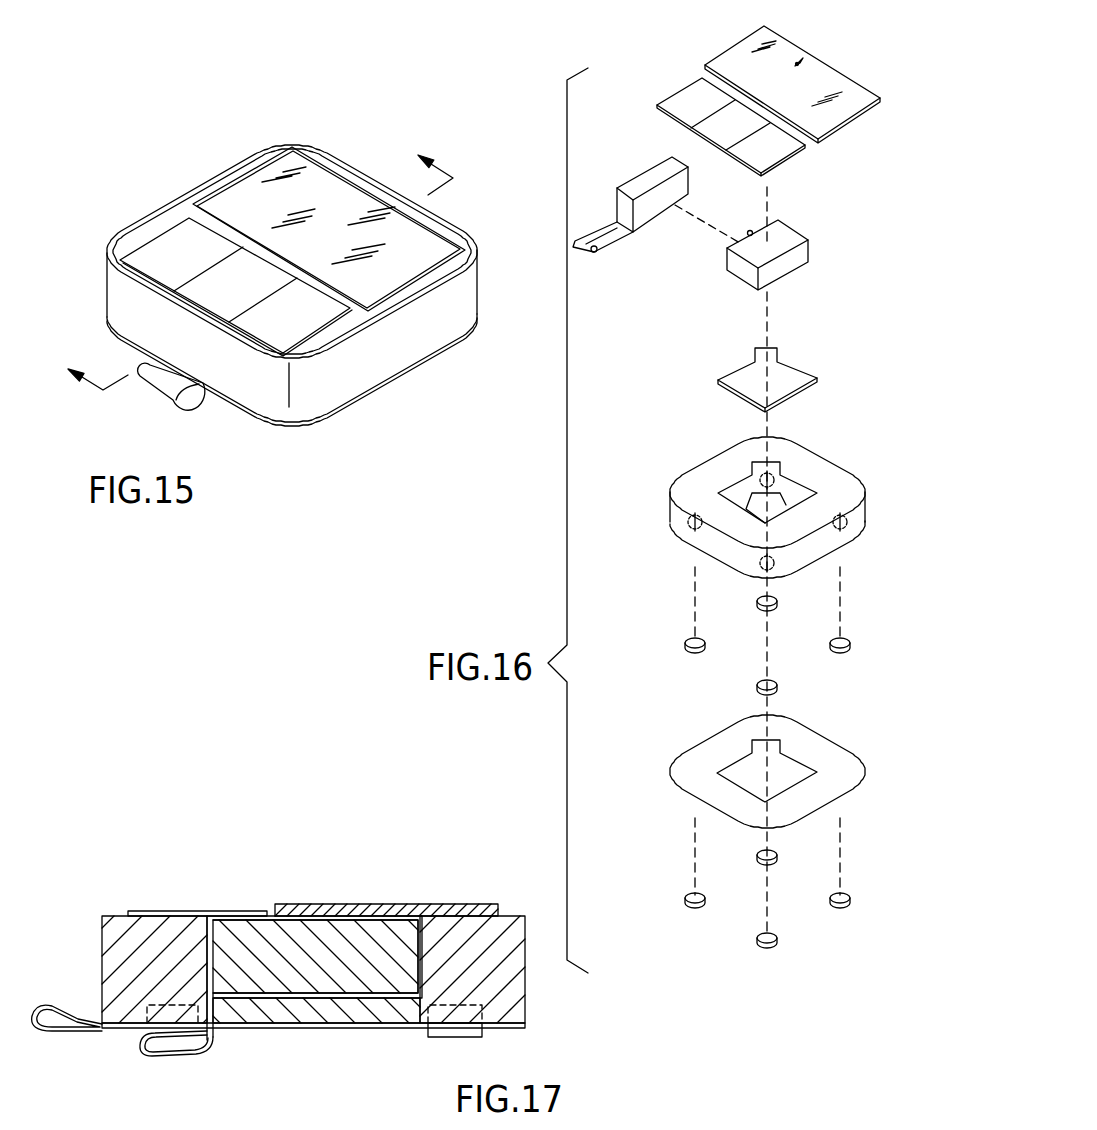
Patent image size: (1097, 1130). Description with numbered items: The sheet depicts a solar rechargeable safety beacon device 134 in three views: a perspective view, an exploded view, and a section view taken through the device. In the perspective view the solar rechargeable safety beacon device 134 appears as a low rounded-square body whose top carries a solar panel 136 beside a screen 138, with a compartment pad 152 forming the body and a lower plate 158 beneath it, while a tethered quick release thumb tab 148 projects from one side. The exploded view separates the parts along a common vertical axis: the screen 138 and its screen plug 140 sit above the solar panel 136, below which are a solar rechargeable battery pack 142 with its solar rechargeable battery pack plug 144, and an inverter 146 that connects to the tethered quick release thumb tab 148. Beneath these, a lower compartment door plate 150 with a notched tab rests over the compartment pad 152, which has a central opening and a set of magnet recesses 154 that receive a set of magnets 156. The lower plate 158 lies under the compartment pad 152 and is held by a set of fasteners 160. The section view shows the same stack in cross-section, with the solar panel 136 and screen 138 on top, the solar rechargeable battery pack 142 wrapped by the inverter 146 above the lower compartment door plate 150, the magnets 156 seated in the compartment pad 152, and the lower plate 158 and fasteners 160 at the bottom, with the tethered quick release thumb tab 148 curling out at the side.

In FIG. 15, the solar rechargeable safety beacon device 134 is at (178, 143).
In FIG. 15, the solar panel 136 is at (175, 256).
In FIG. 16, the solar panel 136 is at (695, 95).
In FIG. 17, the solar panel 136 is at (160, 911).
In FIG. 15, the screen 138 is at (432, 245).
In FIG. 16, the screen 138 is at (838, 85).
In FIG. 17, the screen 138 is at (410, 907).
In FIG. 16, the screen plug 140 is at (800, 61).
In FIG. 16, the solar rechargeable battery pack 142 is at (783, 228).
In FIG. 17, the solar rechargeable battery pack 142 is at (318, 925).
In FIG. 16, the solar rechargeable battery pack plug 144 is at (748, 230).
In FIG. 16, the inverter 146 is at (652, 168).
In FIG. 17, the inverter 146 is at (300, 904).
In FIG. 15, the tethered quick release thumb tab 148 is at (165, 385).
In FIG. 16, the tethered quick release thumb tab 148 is at (597, 250).
In FIG. 17, the tethered quick release thumb tab 148 is at (35, 1005).
In FIG. 16, the lower compartment door plate 150 is at (788, 370).
In FIG. 17, the lower compartment door plate 150 is at (267, 1018).
In FIG. 15, the compartment pad 152 is at (408, 333).
In FIG. 16, the compartment pad 152 is at (807, 465).
In FIG. 17, the compartment pad 152 is at (313, 969).
In FIG. 16, the set of magnet recesses 154 is at (667, 520).
In FIG. 16, the set of magnets 156 is at (697, 653).
In FIG. 17, the set of magnets 156 is at (143, 1013).
In FIG. 15, the lower plate 158 is at (378, 385).
In FIG. 16, the lower plate 158 is at (807, 745).
In FIG. 17, the lower plate 158 is at (548, 1010).
In FIG. 16, the set of fasteners 160 is at (695, 907).
In FIG. 17, the set of fasteners 160 is at (450, 1037).